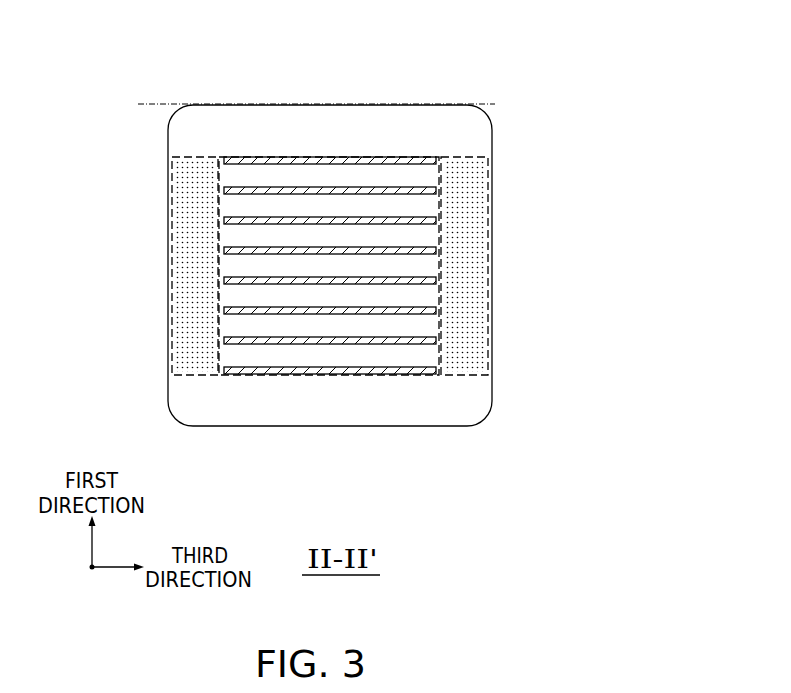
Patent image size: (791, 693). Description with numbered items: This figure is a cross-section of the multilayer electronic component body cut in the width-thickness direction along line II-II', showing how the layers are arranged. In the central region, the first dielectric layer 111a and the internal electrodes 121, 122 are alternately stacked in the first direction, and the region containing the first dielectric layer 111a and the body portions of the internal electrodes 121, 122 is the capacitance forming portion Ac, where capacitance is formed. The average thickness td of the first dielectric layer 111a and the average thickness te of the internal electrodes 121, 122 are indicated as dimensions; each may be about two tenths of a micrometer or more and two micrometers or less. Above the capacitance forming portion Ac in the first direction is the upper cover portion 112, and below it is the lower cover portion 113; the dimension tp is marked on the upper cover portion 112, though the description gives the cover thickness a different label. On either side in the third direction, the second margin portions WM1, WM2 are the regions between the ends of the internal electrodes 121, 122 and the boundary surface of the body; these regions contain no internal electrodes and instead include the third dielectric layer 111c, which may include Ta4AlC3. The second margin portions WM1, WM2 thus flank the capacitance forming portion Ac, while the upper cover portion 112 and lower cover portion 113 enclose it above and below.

The first dielectric layer 111a is at (260, 175).
The third dielectric layer 111c is at (188, 352).
The upper cover portion 112 is at (318, 110).
The lower cover portion 113 is at (313, 420).
The first internal electrode 121 is at (392, 160).
The second internal electrode 122 is at (403, 190).
The second margin portion WM1 is at (166, 297).
The second margin portion WM2 is at (494, 297).
The capacitance forming portion Ac is at (386, 382).
The cover portion thickness tp is at (138, 105).
The average thickness of the internal electrodes te is at (222, 157).
The average thickness of the first dielectric layer td is at (222, 187).